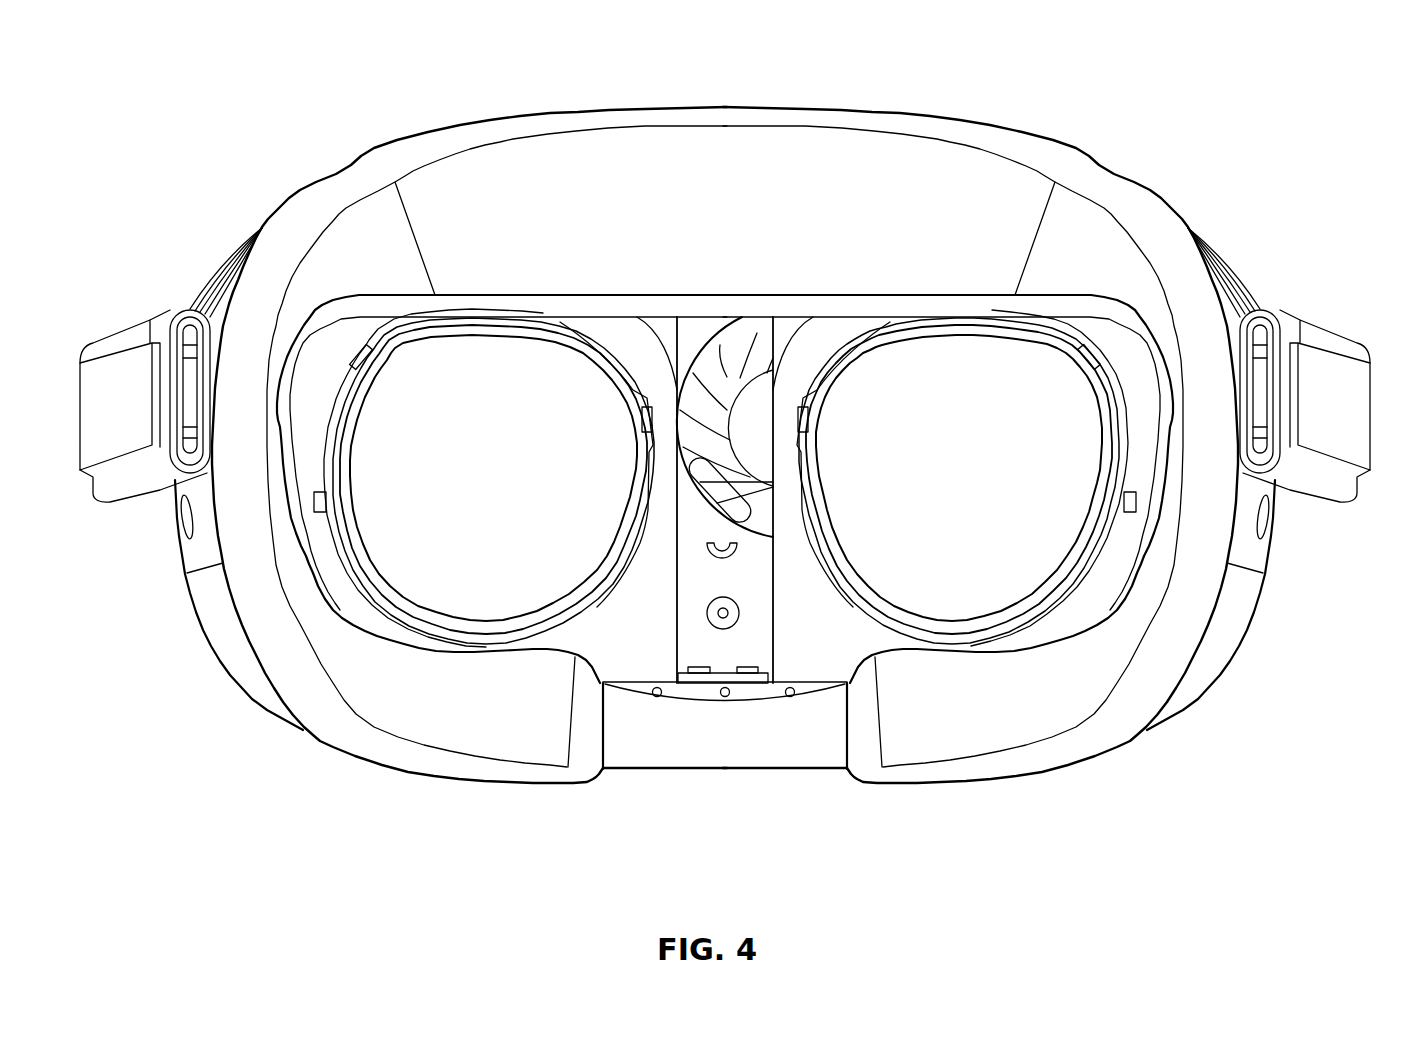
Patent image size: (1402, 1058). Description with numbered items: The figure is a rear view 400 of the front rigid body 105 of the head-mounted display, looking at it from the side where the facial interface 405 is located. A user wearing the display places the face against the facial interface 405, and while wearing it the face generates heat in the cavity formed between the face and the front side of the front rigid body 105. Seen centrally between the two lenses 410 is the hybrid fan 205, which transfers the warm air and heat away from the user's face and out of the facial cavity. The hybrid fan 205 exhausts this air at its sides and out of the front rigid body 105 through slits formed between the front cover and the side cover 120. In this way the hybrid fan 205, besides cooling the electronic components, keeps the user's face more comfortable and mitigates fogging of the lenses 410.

The rear view 400 is at (132, 62).
The front rigid body 105 is at (1077, 147).
The side cover 120 is at (1183, 225).
The hybrid fan 205 is at (733, 342).
The facial interface 405 is at (1055, 710).
The lenses 410 is at (872, 545).